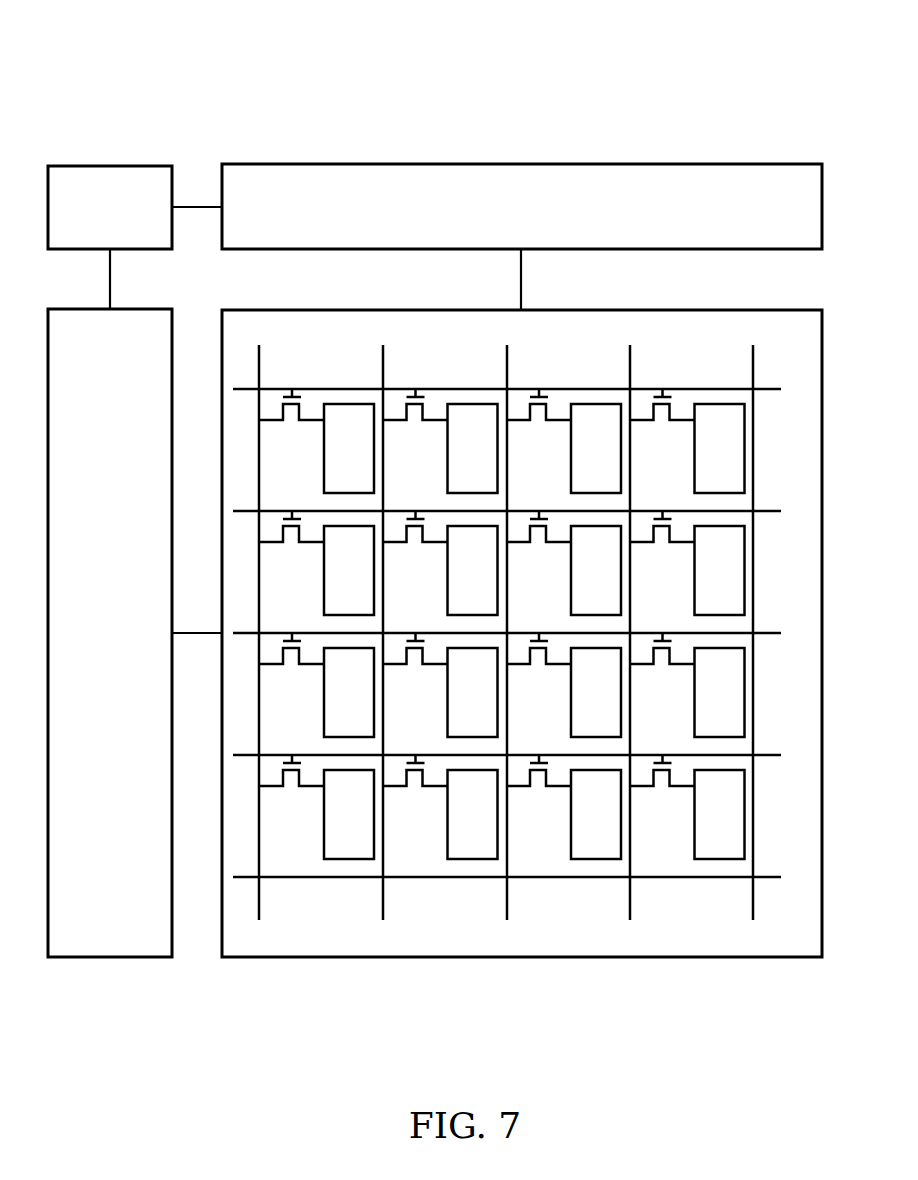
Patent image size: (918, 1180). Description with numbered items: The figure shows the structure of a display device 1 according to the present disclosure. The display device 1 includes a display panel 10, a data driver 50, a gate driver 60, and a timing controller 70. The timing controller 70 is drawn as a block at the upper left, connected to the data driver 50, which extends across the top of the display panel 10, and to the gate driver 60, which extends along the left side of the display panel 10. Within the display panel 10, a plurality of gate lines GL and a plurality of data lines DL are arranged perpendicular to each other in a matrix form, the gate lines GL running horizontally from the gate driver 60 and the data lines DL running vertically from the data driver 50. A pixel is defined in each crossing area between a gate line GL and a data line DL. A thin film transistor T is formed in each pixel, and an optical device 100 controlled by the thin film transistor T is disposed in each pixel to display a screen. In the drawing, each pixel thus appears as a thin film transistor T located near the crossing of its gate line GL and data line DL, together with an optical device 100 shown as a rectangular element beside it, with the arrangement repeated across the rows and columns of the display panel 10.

The display device 1 is at (713, 38).
The display panel 10 is at (790, 957).
The data driver 50 is at (764, 164).
The gate driver 60 is at (138, 957).
The timing controller 70 is at (82, 166).
The optical device 100 is at (745, 814).
The gate line GL is at (524, 627).
The data line DL is at (506, 650).
The thin film transistor T is at (292, 789).